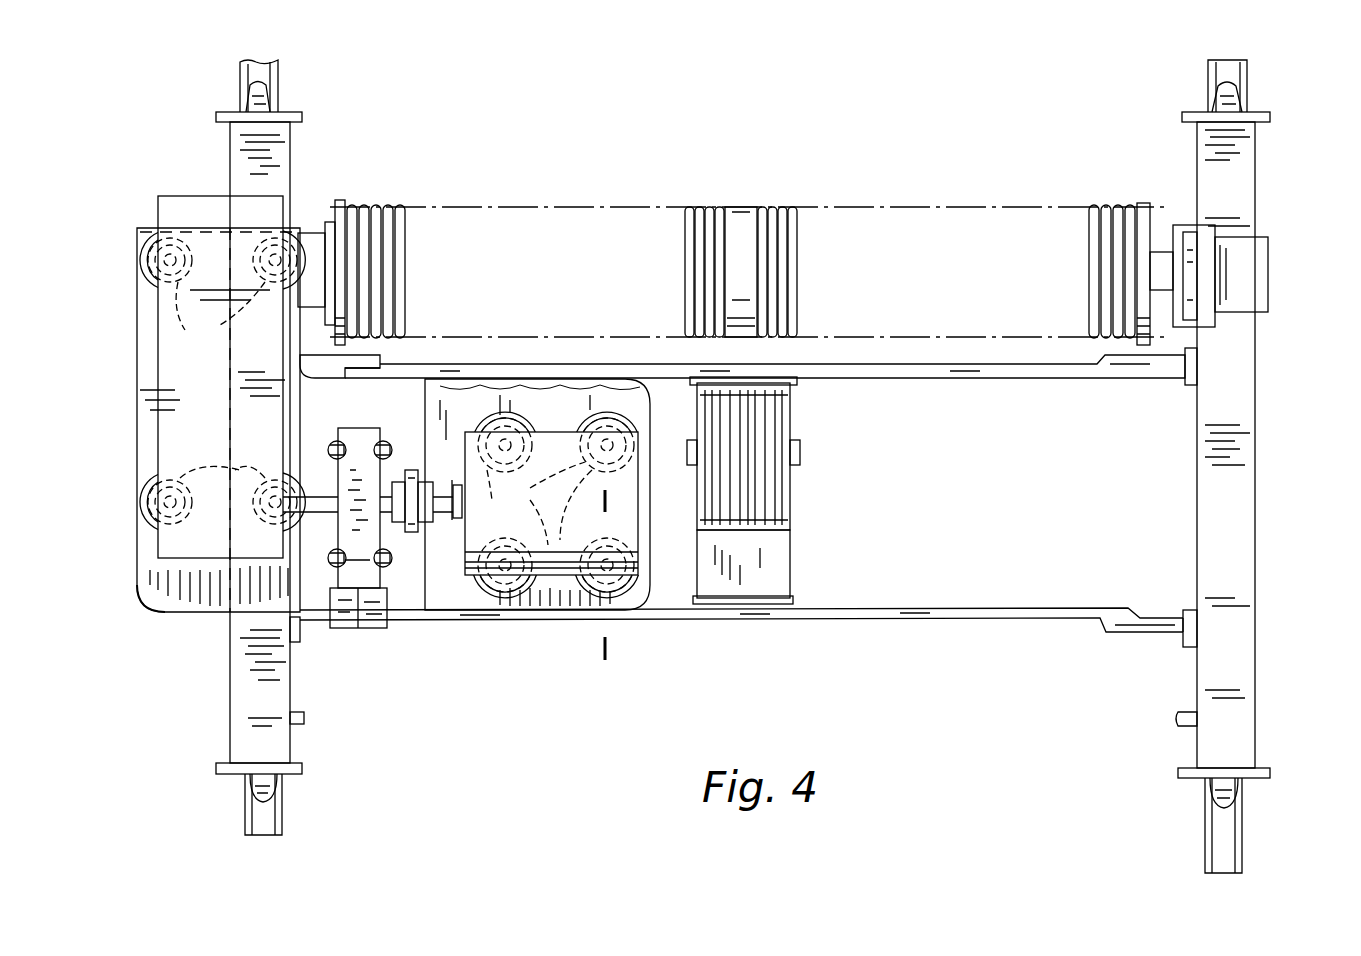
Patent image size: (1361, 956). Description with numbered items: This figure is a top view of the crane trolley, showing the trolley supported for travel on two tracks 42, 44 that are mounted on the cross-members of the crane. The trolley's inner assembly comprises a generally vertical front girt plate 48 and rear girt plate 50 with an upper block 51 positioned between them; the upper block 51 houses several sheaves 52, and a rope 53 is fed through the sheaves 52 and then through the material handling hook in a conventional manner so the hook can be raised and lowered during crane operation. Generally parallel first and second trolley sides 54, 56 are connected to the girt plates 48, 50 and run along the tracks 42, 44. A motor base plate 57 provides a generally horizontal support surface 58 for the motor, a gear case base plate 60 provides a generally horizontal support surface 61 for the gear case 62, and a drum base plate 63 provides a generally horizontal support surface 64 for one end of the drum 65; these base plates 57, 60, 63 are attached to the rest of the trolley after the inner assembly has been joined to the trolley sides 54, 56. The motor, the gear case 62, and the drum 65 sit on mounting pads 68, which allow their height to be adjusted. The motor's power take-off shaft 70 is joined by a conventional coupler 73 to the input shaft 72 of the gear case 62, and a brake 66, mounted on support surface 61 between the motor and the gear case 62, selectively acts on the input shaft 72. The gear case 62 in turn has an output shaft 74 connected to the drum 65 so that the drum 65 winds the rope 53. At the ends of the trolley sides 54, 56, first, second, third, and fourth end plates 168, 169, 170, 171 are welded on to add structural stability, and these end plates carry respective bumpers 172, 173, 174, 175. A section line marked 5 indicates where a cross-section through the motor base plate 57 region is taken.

The section line 5- 5 is at (608, 648).
The track 42 is at (255, 815).
The track 44 is at (1224, 828).
The front girt plate 48 is at (975, 607).
The rear girt plate 50 is at (1040, 368).
The upper block 51 is at (745, 550).
The sheaves 52 is at (778, 433).
The rope 53 is at (763, 205).
The first trolley side 54 is at (237, 690).
The second trolley side 56 is at (1200, 532).
The motor base plate 57 is at (552, 393).
The support surface 58 is at (478, 385).
The gear case base plate 60 is at (195, 590).
The support surface 61 is at (147, 600).
The gear case 62 is at (208, 197).
The drum base plate 63 is at (1238, 283).
The support surface 64 is at (1263, 247).
The drum 65 is at (950, 205).
The brake 66 is at (362, 430).
The mounting pads 68 is at (262, 272).
The power take-off shaft 70 is at (435, 530).
The input shaft 72 is at (312, 492).
The coupler 73 is at (395, 615).
The output shaft 74 is at (320, 280).
The first end plate 168 is at (215, 770).
The second end plate 169 is at (300, 118).
The third end plate 170 is at (1190, 768).
The fourth end plate 171 is at (1258, 117).
The bumper 172 is at (270, 785).
The bumper 173 is at (262, 95).
The bumper 174 is at (1214, 788).
The bumper 175 is at (1232, 90).